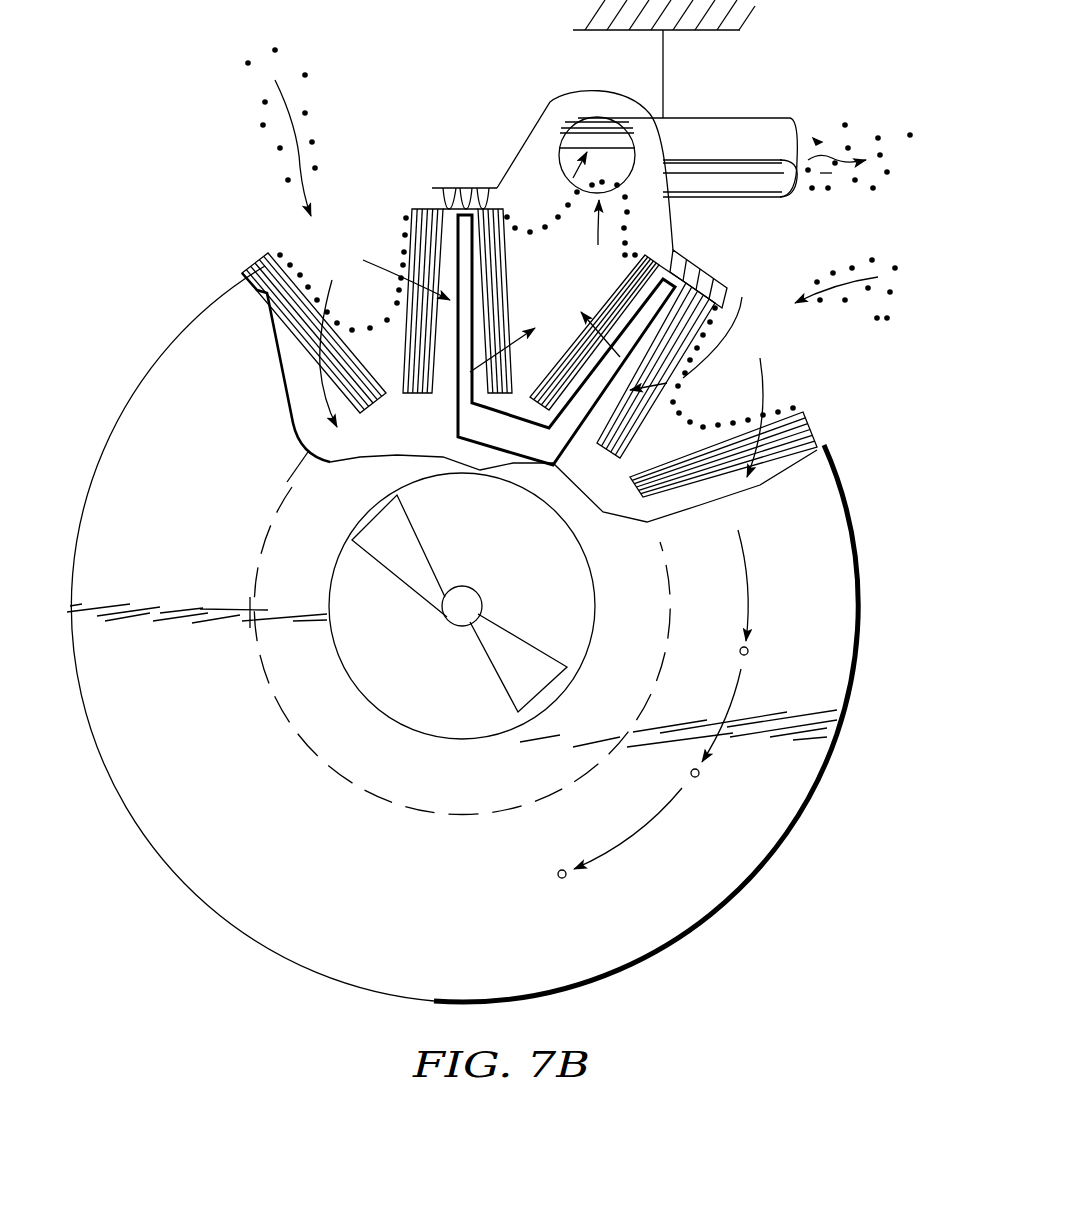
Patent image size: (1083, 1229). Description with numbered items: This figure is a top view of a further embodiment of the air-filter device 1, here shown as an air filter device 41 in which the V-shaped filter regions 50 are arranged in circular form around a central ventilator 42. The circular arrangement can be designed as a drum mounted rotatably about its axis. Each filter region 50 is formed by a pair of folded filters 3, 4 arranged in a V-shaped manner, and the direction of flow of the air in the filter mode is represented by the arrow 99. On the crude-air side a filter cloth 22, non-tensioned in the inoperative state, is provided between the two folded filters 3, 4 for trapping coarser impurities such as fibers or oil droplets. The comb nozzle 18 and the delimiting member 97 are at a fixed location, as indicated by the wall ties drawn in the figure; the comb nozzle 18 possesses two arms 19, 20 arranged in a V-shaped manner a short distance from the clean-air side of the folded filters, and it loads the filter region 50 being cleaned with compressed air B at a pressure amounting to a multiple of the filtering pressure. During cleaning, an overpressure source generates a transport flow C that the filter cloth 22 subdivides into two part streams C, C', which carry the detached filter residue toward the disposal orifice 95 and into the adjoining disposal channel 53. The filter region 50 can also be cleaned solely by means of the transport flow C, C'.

The air-filter device 1 is at (157, 320).
The folded filter 3 is at (293, 327).
The folded filter 4 is at (683, 490).
The comb nozzle 18 is at (490, 451).
The arm 19 is at (457, 400).
The arm 20 is at (577, 437).
The filter cloth 22 is at (620, 238).
The air filter device 41 is at (168, 872).
The ventilator 42 is at (497, 623).
The filter region 50 is at (335, 170).
The disposal channel 53 is at (747, 113).
The disposal orifice 95 is at (567, 120).
The delimiting member 97 is at (597, 90).
The arrow indicating direction of air flow 99 is at (298, 192).
The compressed air B is at (580, 310).
The transport flow C is at (569, 236).
The part stream of transport flow C' is at (540, 177).